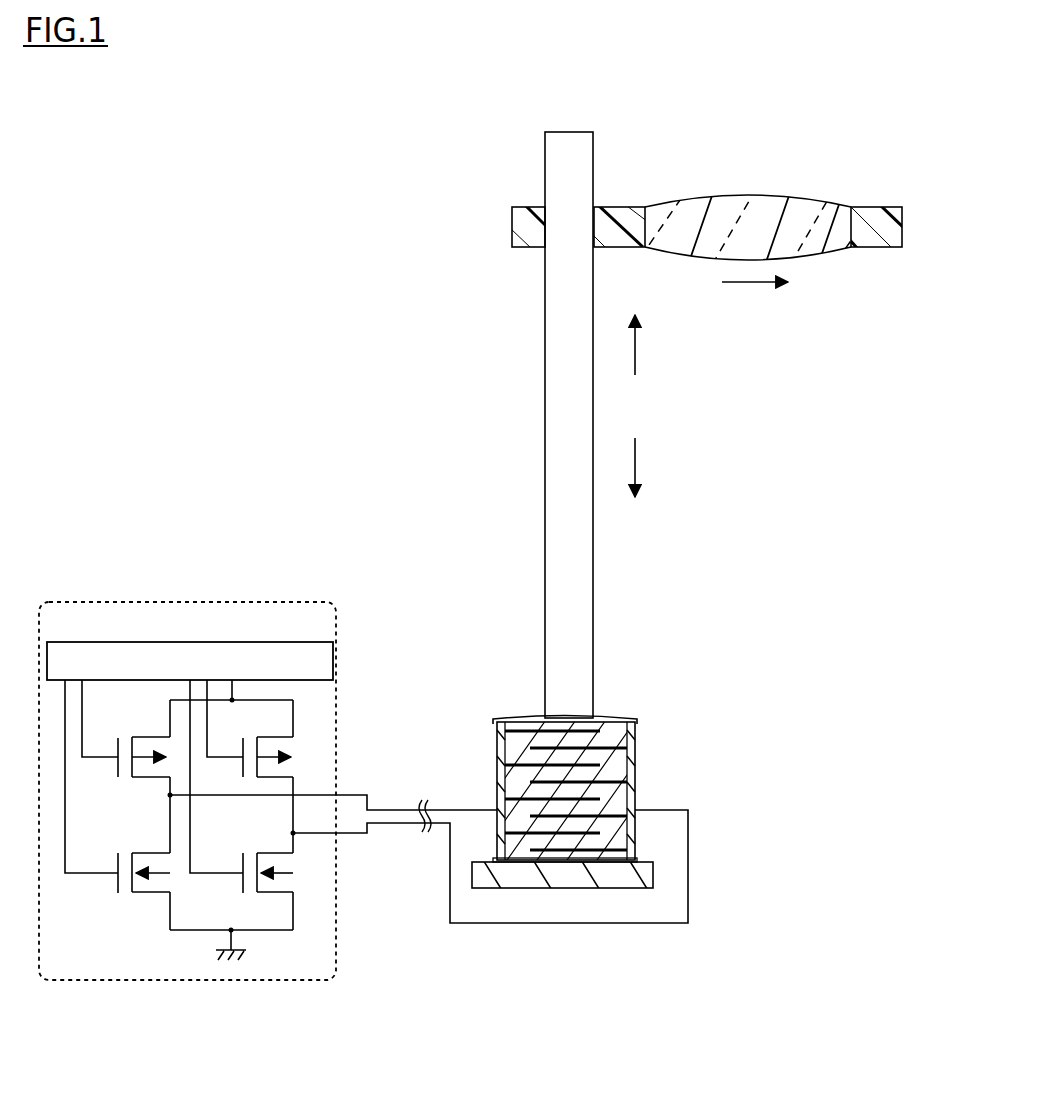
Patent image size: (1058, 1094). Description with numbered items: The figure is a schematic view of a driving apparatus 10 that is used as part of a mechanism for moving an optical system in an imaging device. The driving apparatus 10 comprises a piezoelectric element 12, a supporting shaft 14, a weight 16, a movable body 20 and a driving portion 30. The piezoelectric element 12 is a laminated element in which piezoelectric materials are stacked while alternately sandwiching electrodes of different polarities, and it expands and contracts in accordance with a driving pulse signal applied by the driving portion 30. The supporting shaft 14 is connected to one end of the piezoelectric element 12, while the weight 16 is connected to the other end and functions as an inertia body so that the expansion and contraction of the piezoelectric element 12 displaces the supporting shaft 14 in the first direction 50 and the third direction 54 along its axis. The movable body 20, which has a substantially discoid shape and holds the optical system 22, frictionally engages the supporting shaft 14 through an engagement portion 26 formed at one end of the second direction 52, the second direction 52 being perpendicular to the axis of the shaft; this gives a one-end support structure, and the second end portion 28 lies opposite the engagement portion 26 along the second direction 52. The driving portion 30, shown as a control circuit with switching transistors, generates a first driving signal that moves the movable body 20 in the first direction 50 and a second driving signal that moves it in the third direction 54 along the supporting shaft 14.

The driving apparatus 10 is at (350, 392).
The piezoelectric element 12 is at (628, 717).
The supporting shaft 14 is at (562, 413).
The weight 16 is at (627, 878).
The movable body 20 is at (804, 141).
The optical system 22 is at (738, 216).
The engagement portion 26 is at (592, 210).
The second end portion 28 is at (876, 214).
The driving portion 30 is at (148, 602).
The first direction 50 is at (636, 350).
The second direction 52 is at (757, 283).
The third direction 54 is at (636, 462).